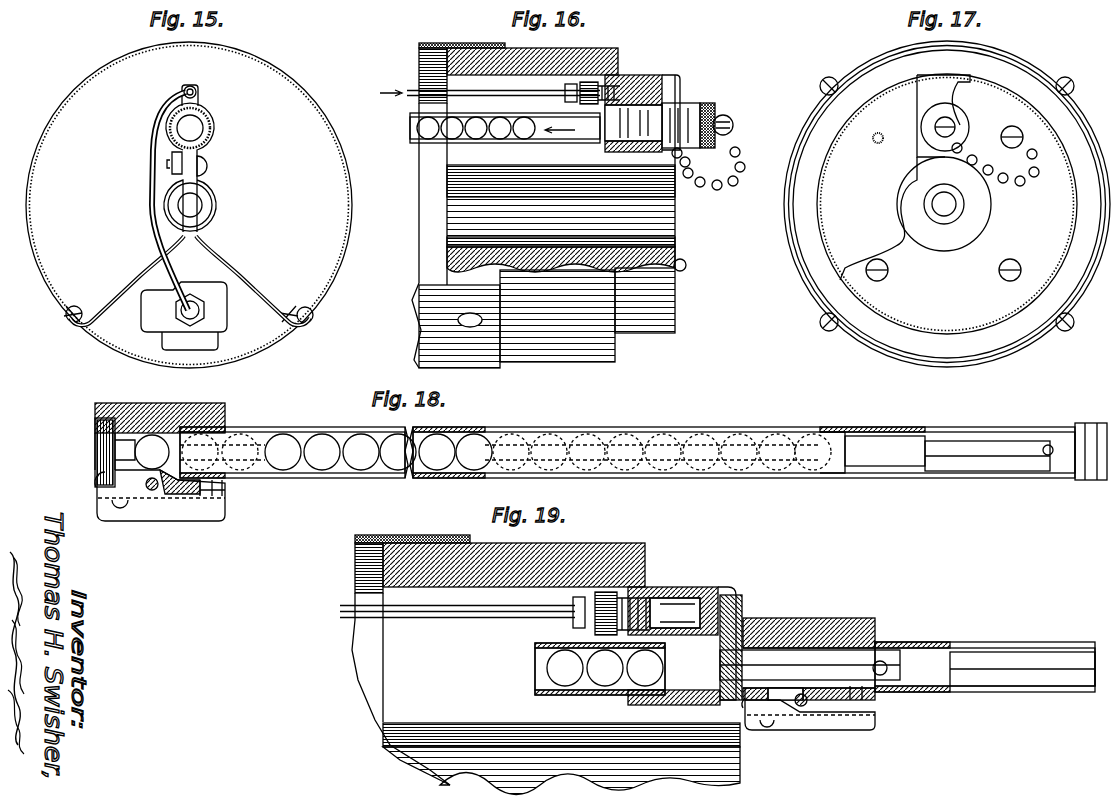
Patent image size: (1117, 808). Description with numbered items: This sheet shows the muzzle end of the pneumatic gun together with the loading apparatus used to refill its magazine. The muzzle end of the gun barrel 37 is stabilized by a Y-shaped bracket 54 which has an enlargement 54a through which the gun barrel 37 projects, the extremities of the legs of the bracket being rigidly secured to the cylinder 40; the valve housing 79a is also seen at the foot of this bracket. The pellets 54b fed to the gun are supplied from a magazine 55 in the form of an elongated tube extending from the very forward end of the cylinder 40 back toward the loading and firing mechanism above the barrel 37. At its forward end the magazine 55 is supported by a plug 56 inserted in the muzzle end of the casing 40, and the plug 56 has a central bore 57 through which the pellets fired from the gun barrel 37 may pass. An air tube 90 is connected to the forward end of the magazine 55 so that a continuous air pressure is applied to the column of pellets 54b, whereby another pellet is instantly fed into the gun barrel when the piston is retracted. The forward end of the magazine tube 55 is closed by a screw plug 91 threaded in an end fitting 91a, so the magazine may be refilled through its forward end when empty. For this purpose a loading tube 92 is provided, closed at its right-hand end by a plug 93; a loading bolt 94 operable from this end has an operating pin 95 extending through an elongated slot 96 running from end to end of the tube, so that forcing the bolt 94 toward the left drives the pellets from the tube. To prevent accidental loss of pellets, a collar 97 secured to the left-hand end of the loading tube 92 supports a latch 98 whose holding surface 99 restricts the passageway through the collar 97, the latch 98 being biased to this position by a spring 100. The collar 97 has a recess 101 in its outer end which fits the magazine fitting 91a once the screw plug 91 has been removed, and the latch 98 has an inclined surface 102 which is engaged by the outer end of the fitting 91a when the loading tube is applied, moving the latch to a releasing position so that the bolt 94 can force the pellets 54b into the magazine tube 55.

In FIG. 15, the gun barrel 37 is at (204, 210).
In FIG. 17, the gun barrel 37 is at (966, 210).
In FIG. 15, the cylinder 40 is at (258, 78).
In FIG. 16, the cylinder 40 is at (428, 45).
In FIG. 17, the cylinder 40 is at (862, 348).
In FIG. 19, the cylinder 40 is at (365, 535).
In FIG. 15, the Y-shaped bracket 54 is at (232, 280).
In FIG. 15, the enlargement 54a is at (206, 183).
In FIG. 16, the pellets 54b is at (420, 135).
In FIG. 18, the pellets 54b is at (305, 465).
In FIG. 19, the pellets 54b is at (600, 690).
In FIG. 15, the magazine 55 is at (208, 130).
In FIG. 16, the magazine 55 is at (540, 142).
In FIG. 19, the magazine 55 is at (548, 695).
In FIG. 16, the plug 56 is at (582, 358).
In FIG. 17, the plug 56 is at (920, 358).
In FIG. 19, the plug 56 is at (608, 543).
In FIG. 16, the central bore 57 is at (660, 240).
In FIG. 17, the central bore 57 is at (905, 195).
In FIG. 19, the central bore 57 is at (438, 718).
In FIG. 15, the valve housing 79a is at (230, 328).
In FIG. 15, the air tube 90 is at (155, 340).
In FIG. 16, the air tube 90 is at (410, 96).
In FIG. 19, the air tube 90 is at (490, 618).
In FIG. 16, the screw plug 91 is at (712, 103).
In FIG. 17, the screw plug 91 is at (925, 135).
In FIG. 16, the end fitting 91a is at (688, 100).
In FIG. 17, the end fitting 91a is at (935, 75).
In FIG. 19, the end fitting 91a is at (745, 625).
In FIG. 18, the loading tube 92 is at (738, 427).
In FIG. 19, the loading tube 92 is at (1020, 642).
In FIG. 18, the plug 93 is at (1100, 423).
In FIG. 18, the loading bolt 94 is at (905, 455).
In FIG. 19, the loading bolt 94 is at (862, 680).
In FIG. 18, the operating pin 95 is at (1048, 456).
In FIG. 19, the operating pin 95 is at (885, 662).
In FIG. 18, the elongated slot 96 is at (985, 455).
In FIG. 19, the elongated slot 96 is at (1030, 686).
In FIG. 18, the collar 97 is at (148, 403).
In FIG. 19, the collar 97 is at (815, 618).
In FIG. 18, the latch 98 is at (150, 508).
In FIG. 19, the latch 98 is at (812, 722).
In FIG. 18, the holding surface 99 is at (103, 448).
In FIG. 18, the spring 100 is at (225, 494).
In FIG. 19, the spring 100 is at (875, 702).
In FIG. 18, the recess 101 is at (95, 414).
In FIG. 18, the inclined surface 102 is at (98, 482).
In FIG. 19, the inclined surface 102 is at (745, 705).